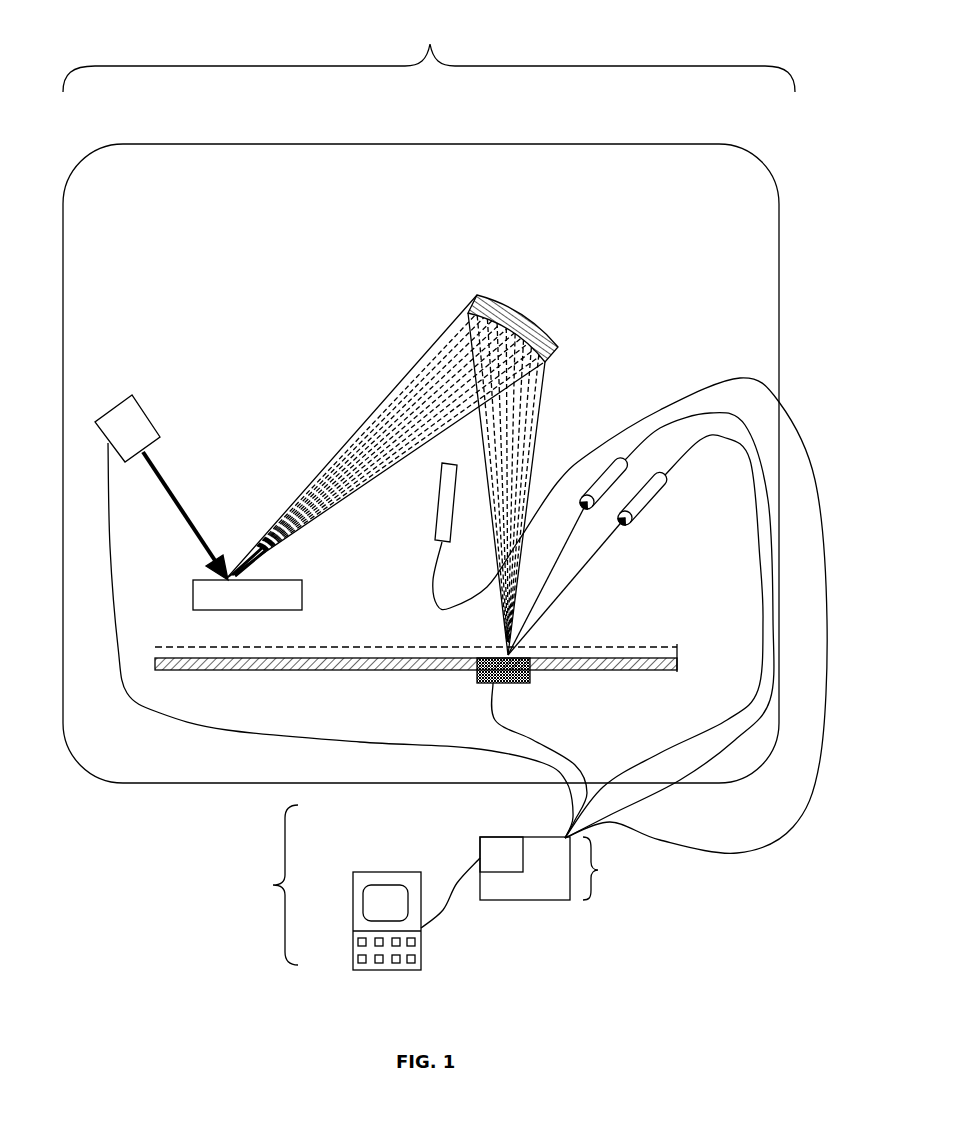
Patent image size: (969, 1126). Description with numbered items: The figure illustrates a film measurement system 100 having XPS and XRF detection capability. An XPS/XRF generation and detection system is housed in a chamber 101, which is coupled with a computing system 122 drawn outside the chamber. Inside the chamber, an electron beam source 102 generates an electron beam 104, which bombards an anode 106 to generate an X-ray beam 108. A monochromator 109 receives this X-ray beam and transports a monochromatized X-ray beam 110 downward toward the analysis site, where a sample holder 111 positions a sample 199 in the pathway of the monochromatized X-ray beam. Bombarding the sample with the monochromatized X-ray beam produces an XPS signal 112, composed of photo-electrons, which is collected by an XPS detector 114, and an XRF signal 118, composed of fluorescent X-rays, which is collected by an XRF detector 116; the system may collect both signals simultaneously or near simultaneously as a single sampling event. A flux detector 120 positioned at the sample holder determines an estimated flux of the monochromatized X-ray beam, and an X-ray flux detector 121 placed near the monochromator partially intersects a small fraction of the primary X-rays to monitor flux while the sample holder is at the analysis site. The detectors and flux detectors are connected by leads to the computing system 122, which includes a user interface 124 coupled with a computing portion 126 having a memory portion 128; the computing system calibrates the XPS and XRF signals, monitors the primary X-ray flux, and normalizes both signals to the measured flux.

The film measurement system 100 is at (429, 56).
The chamber 101 is at (779, 247).
The electron beam source 102 is at (135, 420).
The electron beam 104 is at (180, 497).
The anode 106 is at (255, 598).
The X-ray beam 108 is at (387, 400).
The monochromator 109 is at (522, 312).
The monochromatized X-ray beam 110 is at (543, 405).
The sample holder 111 is at (680, 663).
The XPS signal 112 is at (587, 573).
The XPS detector 114 is at (660, 500).
The XRF detector 116 is at (625, 457).
The XRF signal 118 is at (573, 533).
The flux detector 120 is at (522, 683).
The X-ray flux detector 121 is at (437, 517).
The computing system 122 is at (268, 885).
The user interface 124 is at (362, 895).
The computing portion 126 is at (557, 868).
The memory portion 128 is at (503, 843).
The sample 199 is at (158, 647).